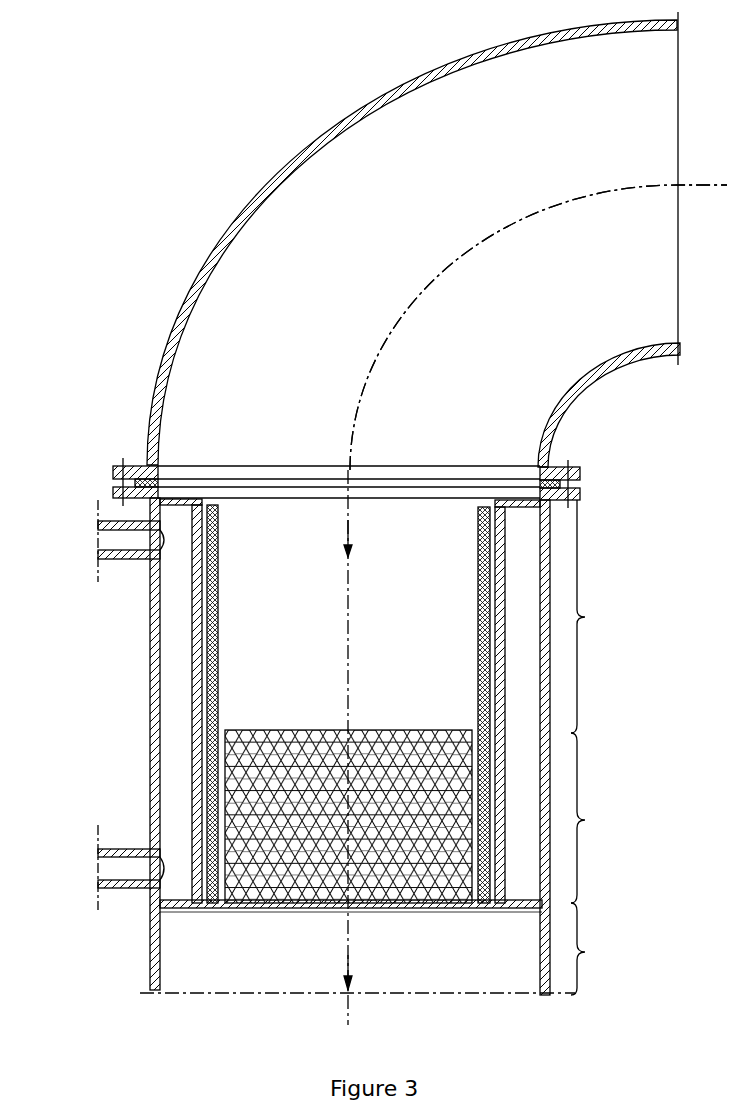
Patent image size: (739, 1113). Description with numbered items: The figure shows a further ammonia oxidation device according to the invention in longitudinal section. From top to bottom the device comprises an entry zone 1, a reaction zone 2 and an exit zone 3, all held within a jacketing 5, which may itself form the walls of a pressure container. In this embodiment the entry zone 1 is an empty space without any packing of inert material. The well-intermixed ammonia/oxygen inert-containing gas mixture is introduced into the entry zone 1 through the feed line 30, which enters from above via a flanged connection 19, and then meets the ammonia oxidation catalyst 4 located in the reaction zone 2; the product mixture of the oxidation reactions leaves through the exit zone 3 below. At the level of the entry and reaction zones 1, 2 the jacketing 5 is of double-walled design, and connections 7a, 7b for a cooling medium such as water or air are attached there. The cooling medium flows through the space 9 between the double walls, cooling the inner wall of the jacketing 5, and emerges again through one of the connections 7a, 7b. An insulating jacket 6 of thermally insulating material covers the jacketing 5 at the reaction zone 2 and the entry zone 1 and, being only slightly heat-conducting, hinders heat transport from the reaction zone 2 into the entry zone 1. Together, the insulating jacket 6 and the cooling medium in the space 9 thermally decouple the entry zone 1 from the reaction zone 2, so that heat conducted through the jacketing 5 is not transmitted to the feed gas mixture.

The feed line 30 is at (578, 197).
The flange connection 19 is at (577, 467).
The entry zone 1 is at (603, 616).
The reaction zone 2 is at (430, 816).
The exit zone 3 is at (603, 949).
The ammonia oxidation catalyst 4 is at (367, 907).
The jacketing 5 is at (553, 987).
The insulating jacket 6 is at (218, 615).
The connection for cooling medium 7a is at (190, 869).
The connection for cooling medium 7b is at (190, 540).
The space between the double walls 9 is at (178, 722).